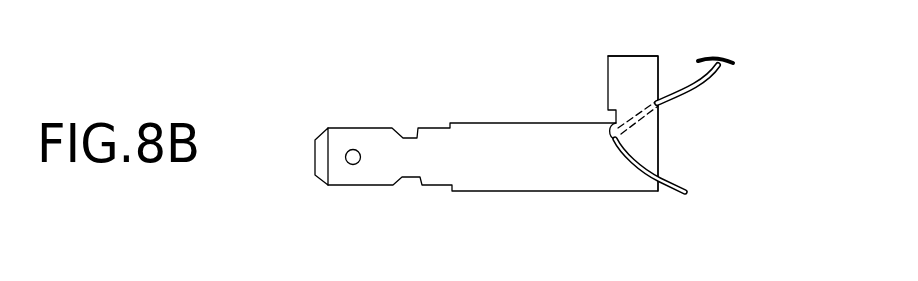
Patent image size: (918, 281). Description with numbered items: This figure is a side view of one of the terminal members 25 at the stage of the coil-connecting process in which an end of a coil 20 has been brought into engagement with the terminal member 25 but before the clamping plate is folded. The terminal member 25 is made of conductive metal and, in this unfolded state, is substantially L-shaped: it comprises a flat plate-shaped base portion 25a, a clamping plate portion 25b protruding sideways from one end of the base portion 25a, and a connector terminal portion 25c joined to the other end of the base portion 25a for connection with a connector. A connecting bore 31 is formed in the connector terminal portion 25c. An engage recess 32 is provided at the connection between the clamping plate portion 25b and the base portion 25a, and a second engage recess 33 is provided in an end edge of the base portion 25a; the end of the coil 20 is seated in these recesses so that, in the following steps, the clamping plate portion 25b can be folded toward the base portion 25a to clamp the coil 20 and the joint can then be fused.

The terminal member 25 is at (461, 121).
The base portion 25a is at (498, 186).
The clamping plate portion 25b is at (650, 72).
The connector terminal portion 25c is at (340, 185).
The connecting bore 31 is at (345, 155).
The engage recess 32 is at (612, 125).
The engage recess 33 is at (653, 175).
The coil 20 is at (702, 90).